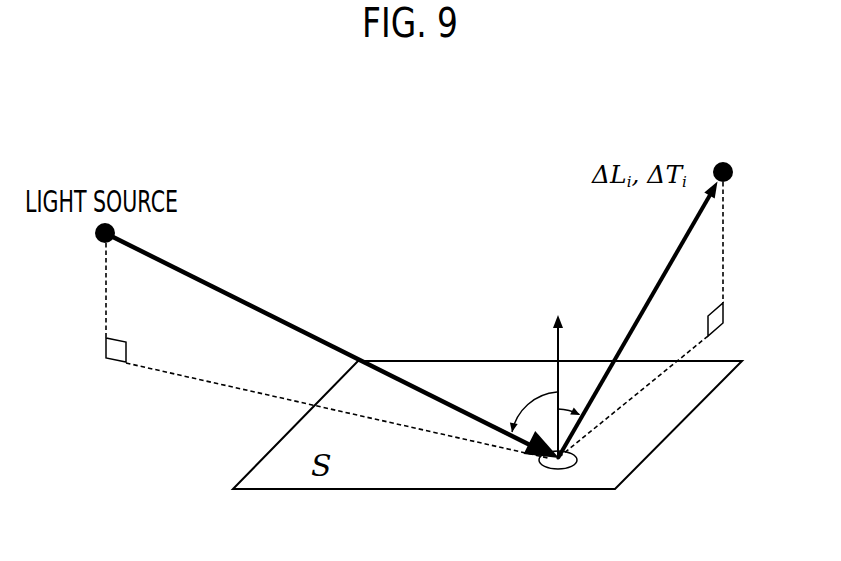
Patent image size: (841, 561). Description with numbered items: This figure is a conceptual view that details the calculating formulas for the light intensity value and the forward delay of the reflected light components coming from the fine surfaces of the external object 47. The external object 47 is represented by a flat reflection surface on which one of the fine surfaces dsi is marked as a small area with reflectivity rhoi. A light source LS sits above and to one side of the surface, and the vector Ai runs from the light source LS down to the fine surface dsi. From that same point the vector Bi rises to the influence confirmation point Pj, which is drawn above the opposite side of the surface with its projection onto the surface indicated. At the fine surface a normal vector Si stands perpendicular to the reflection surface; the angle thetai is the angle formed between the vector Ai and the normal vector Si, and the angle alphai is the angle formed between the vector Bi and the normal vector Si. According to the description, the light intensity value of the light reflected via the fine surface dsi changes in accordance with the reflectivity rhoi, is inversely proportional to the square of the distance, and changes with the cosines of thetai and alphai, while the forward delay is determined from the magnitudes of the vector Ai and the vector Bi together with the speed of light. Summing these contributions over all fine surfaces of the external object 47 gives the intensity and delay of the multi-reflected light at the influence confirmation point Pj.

The external object 47 is at (432, 372).
The vector A_i Ai is at (312, 291).
The vector B_i Bi is at (637, 270).
The normal vector s_i Si is at (565, 274).
The influence confirmation point Pj is at (650, 291).
The light source LS is at (321, 340).
The fine surfaces Δs_i dsi is at (580, 462).
The reflectivity ρ_i rhoi is at (553, 489).
The angle θ_i thetai is at (525, 401).
The angle α_i alphai is at (575, 389).